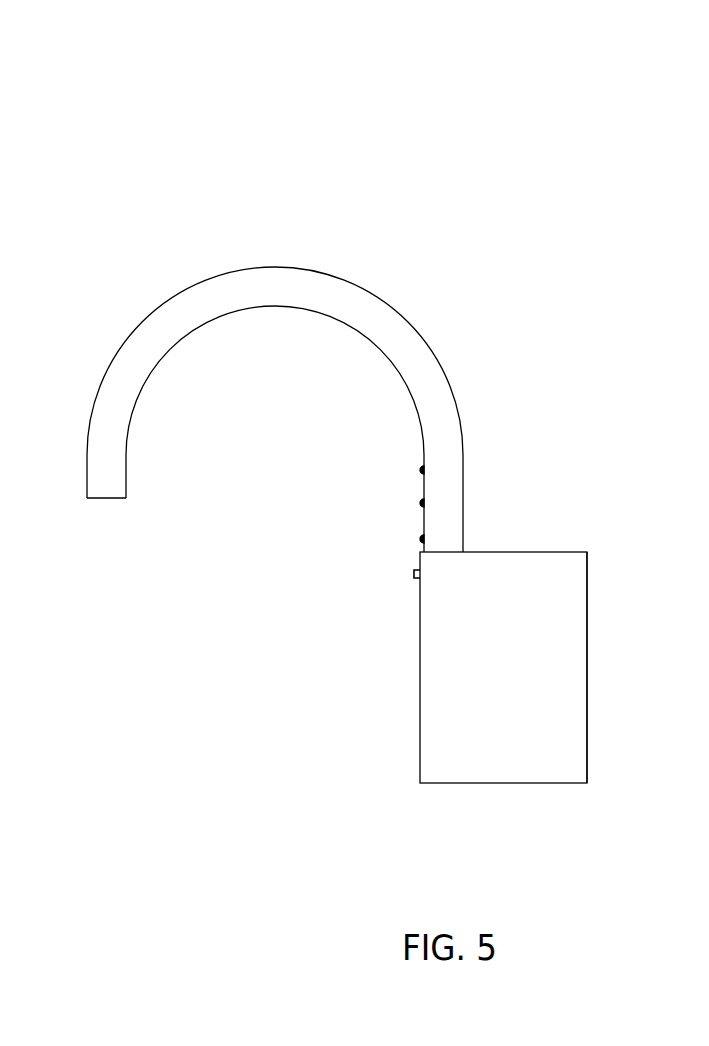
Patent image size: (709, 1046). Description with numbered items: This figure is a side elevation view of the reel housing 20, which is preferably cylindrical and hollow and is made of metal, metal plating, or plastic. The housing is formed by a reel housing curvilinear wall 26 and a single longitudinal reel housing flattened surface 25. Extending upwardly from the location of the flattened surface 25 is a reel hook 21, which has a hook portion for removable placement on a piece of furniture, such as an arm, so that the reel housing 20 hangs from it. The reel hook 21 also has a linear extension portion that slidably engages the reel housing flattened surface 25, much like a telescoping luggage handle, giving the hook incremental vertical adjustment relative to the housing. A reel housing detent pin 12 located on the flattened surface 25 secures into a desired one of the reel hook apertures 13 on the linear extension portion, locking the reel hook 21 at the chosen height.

The reel housing 20 is at (360, 438).
The reel hook 21 is at (232, 300).
The reel hook aperture 13 is at (424, 470).
The reel housing detent pin 12 is at (413, 575).
The reel housing flattened surface 25 is at (419, 694).
The reel housing curvilinear wall 26 is at (588, 702).